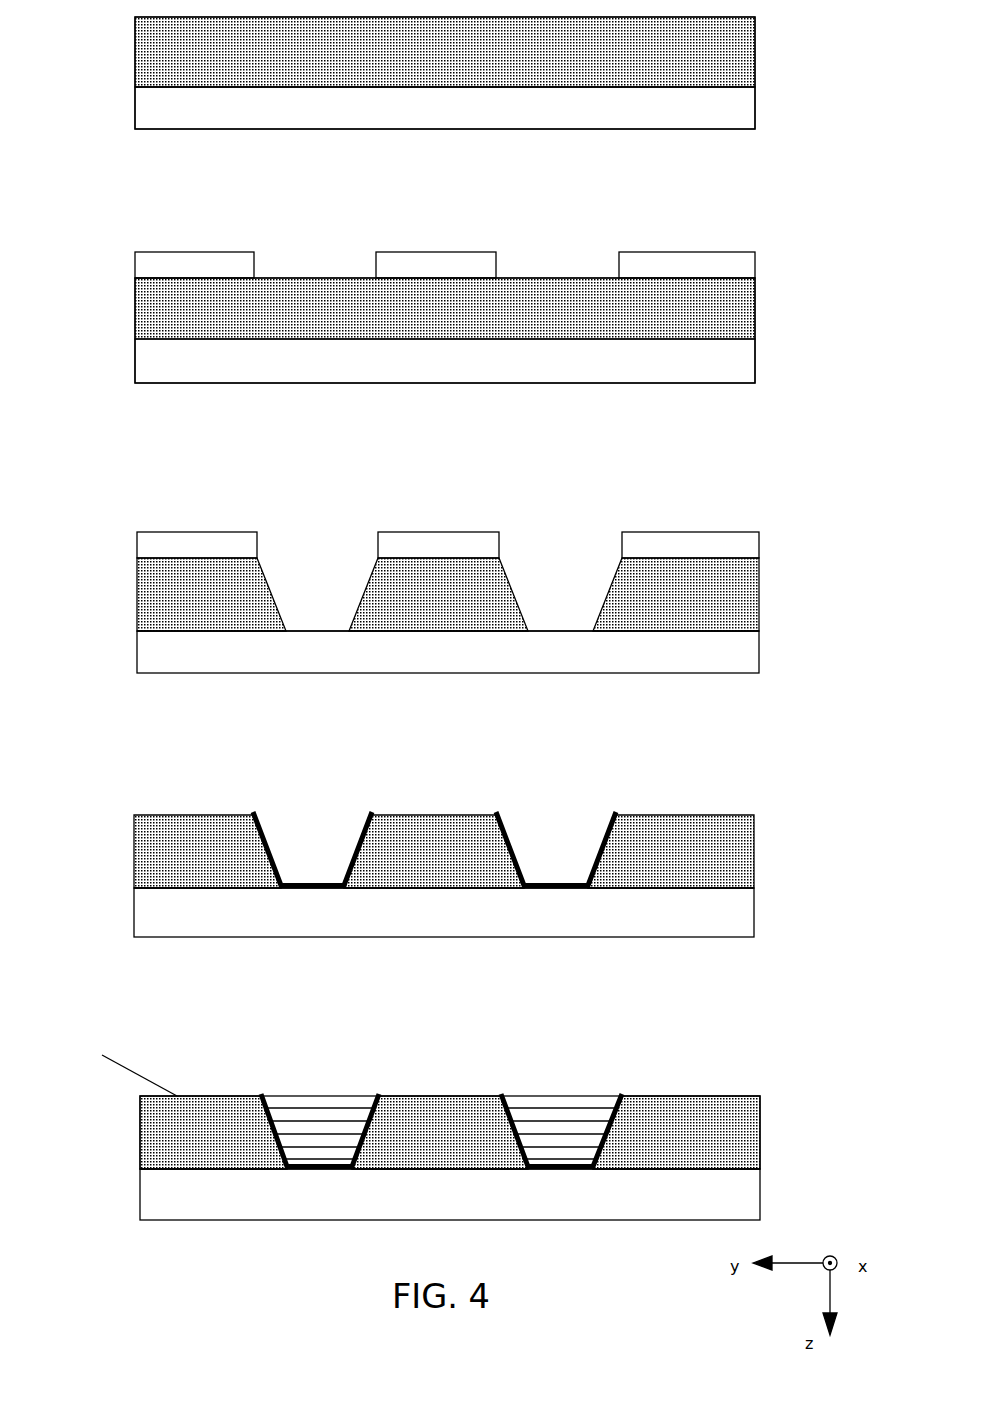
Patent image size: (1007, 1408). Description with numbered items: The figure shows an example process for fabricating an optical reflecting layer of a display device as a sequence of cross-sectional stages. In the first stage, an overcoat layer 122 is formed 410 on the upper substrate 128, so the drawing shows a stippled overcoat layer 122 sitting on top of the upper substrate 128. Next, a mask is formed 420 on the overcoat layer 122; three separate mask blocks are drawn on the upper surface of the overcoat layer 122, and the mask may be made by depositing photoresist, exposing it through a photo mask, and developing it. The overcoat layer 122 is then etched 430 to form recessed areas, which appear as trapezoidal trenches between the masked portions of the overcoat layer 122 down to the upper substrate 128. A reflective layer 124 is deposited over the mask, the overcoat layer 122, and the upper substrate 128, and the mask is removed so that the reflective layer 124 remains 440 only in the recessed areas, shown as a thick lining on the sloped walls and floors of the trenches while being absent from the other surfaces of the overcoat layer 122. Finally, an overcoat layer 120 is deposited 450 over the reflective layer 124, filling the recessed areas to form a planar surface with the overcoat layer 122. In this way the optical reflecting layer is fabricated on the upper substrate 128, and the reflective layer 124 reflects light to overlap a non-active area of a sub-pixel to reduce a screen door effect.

The forming the overcoat layer 410 is at (61, 100).
The forming the mask 420 is at (61, 334).
The etching the overcoat layer 430 is at (61, 630).
The reflective layer remaining in recessed areas 440 is at (61, 886).
The depositing the overcoat layer 450 is at (61, 1168).
The overcoat layer 122 is at (445, 178).
The upper substrate 128 is at (447, 653).
The reflective layer 124 is at (613, 821).
The overcoat layer 120 is at (573, 1118).